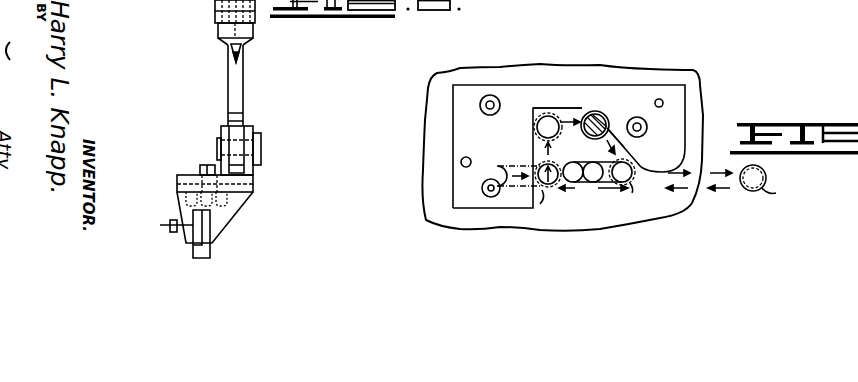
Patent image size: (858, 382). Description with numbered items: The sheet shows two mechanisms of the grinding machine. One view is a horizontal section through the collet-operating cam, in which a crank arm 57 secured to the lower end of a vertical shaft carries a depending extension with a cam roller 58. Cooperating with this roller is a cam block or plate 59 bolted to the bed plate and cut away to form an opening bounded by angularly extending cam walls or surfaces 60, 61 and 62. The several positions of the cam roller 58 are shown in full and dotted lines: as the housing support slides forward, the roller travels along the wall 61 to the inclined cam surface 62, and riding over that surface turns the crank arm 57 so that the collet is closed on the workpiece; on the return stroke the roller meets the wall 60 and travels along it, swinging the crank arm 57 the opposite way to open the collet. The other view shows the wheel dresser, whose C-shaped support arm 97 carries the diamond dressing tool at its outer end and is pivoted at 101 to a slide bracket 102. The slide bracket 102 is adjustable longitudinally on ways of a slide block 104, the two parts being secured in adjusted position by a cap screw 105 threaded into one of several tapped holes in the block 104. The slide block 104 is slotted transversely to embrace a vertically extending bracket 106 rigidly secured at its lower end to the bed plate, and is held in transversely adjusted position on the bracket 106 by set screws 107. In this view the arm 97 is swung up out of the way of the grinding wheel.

In FIG. 4, the C-shaped support arm 97 is at (238, 81).
In FIG. 4, the pivot 101 is at (262, 145).
In FIG. 4, the slide bracket 102 is at (253, 172).
In FIG. 4, the slide block 104 is at (235, 206).
In FIG. 4, the cap screw 105 is at (200, 165).
In FIG. 4, the vertically extending bracket 106 is at (205, 228).
In FIG. 4, the set screws 107 is at (168, 225).
In FIG. 5, the crank arm 57 is at (515, 190).
In FIG. 5, the cam roller 58 is at (601, 111).
In FIG. 5, the cam block or plate 59 is at (460, 139).
In FIG. 5, the cam wall 60 is at (533, 140).
In FIG. 5, the cam wall 61 is at (567, 108).
In FIG. 5, the inclined cam surface 62 is at (612, 120).